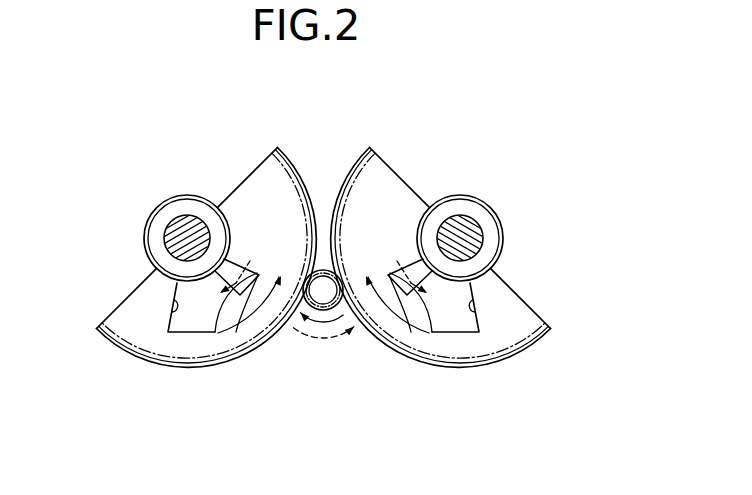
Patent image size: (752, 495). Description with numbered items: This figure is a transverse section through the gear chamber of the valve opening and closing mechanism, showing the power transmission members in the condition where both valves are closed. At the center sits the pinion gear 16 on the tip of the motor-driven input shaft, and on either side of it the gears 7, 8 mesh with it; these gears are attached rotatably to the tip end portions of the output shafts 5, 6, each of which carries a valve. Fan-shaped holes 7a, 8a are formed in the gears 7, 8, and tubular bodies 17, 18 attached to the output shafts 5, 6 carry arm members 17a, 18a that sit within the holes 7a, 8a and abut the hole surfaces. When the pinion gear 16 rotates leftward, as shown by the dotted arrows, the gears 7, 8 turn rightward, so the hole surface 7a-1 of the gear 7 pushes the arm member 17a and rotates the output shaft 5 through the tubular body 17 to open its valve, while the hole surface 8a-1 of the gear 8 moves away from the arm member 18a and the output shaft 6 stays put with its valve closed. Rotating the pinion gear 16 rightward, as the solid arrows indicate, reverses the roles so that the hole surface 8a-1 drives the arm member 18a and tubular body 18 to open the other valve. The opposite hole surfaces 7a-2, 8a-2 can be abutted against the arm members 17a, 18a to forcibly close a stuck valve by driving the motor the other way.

The output shaft 5 is at (187, 216).
The output shaft 6 is at (459, 215).
The gear 7 is at (258, 168).
The gear 8 is at (385, 168).
The fan-shaped hole 7a is at (188, 325).
The hole surface 7a-1 is at (268, 308).
The hole surface 7a-2 is at (178, 308).
The fan-shaped hole 8a is at (450, 320).
The hole surface 8a-1 is at (379, 310).
The hole surface 8a-2 is at (469, 308).
The pinion gear 16 is at (323, 298).
The tubular body 17 is at (150, 253).
The arm member 17a is at (215, 333).
The tubular body 18 is at (498, 256).
The arm member 18a is at (431, 334).